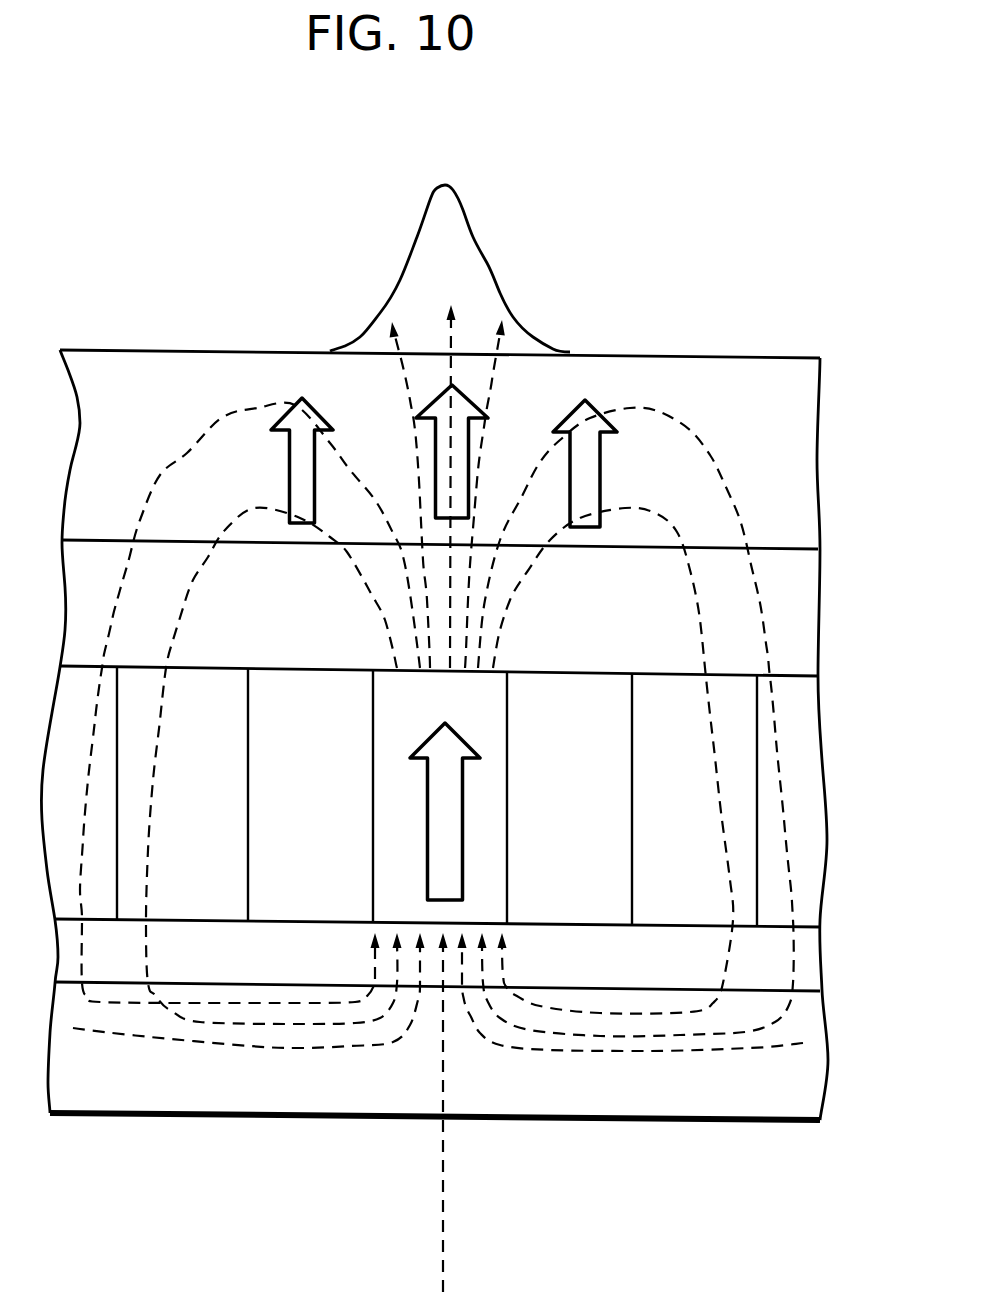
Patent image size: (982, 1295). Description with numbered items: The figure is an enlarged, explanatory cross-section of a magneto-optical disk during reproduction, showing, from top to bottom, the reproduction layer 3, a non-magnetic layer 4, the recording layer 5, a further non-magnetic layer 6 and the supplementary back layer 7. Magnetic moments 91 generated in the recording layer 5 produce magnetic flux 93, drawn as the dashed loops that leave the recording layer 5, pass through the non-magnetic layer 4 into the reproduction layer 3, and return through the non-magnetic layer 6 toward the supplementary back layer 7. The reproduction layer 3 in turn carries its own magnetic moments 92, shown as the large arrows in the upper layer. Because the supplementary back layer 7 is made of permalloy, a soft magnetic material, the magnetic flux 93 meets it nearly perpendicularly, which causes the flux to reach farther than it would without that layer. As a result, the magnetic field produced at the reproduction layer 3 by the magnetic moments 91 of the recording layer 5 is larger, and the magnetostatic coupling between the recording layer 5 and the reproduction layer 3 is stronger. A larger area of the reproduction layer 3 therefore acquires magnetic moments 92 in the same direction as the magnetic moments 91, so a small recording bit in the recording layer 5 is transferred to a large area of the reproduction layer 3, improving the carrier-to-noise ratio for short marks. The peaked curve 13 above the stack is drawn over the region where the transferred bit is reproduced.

The reproduction layer 3 is at (800, 500).
The non-magnetic layer 4 is at (802, 618).
The recording layer 5 is at (795, 773).
The non-magnetic layer 6 is at (805, 960).
The supplementary back layer 7 is at (798, 1078).
The reproduced output waveform 13 is at (480, 253).
The magnetic moments 91 is at (438, 830).
The magnetic moments 92 is at (483, 406).
The magnetic flux 93 is at (150, 470).